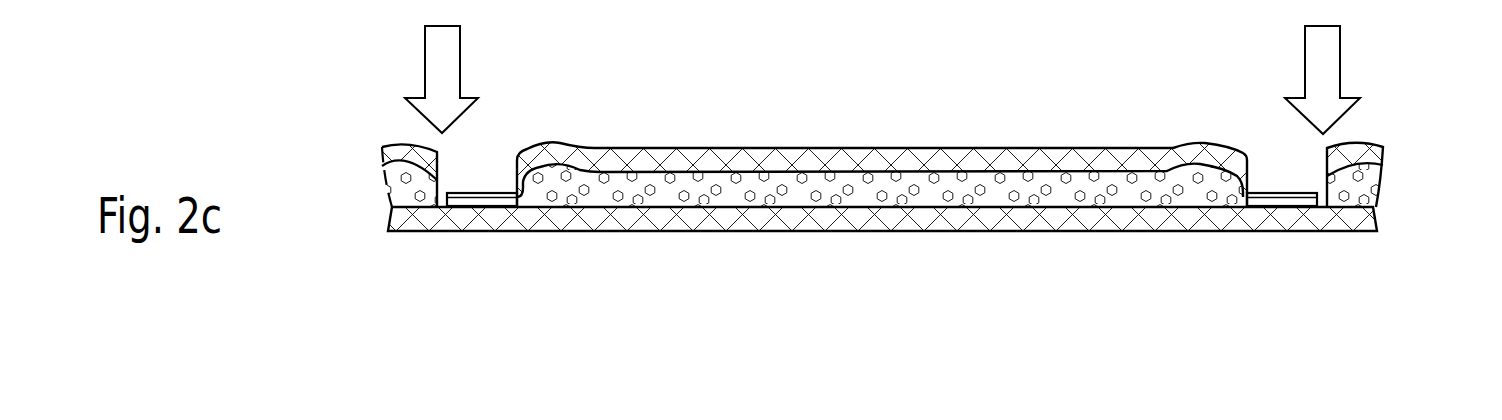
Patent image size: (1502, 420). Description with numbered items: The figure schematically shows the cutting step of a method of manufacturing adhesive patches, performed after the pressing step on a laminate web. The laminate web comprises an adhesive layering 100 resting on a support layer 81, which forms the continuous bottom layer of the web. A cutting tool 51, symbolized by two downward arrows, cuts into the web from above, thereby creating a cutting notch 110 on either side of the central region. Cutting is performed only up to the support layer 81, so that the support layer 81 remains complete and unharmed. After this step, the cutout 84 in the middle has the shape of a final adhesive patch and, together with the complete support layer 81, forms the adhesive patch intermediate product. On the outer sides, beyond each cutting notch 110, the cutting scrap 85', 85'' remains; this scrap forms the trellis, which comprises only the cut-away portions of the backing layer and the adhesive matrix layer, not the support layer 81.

The adhesive layering 100 is at (300, 108).
The support layer 81 is at (803, 220).
The cutout 84 is at (890, 138).
The cutting notch 110 is at (451, 183).
The cutting scrap 85' is at (382, 124).
The cutting scrap 85'' is at (1394, 119).
The cutting tool 51 is at (448, 42).